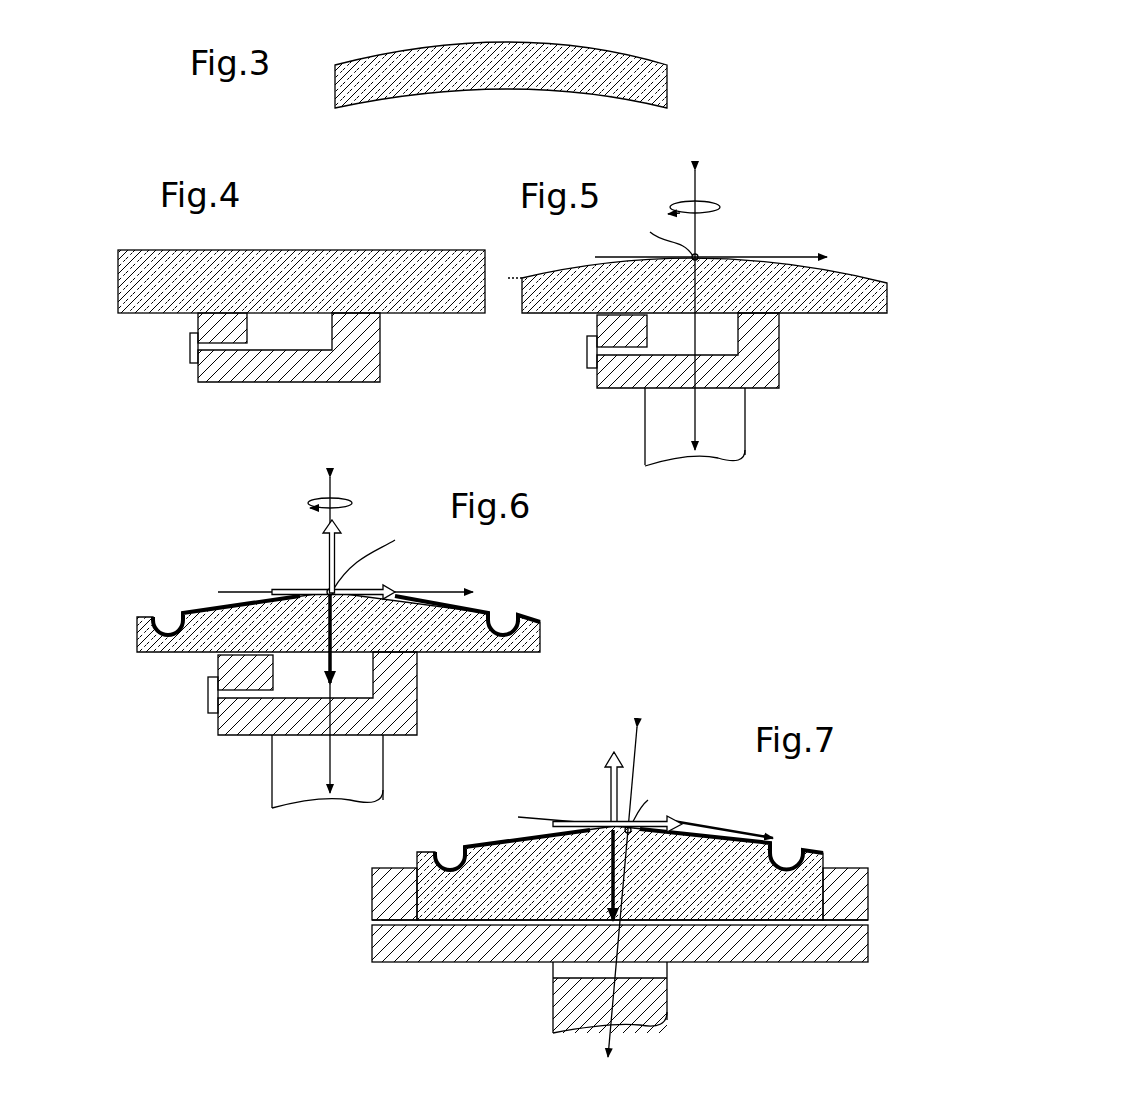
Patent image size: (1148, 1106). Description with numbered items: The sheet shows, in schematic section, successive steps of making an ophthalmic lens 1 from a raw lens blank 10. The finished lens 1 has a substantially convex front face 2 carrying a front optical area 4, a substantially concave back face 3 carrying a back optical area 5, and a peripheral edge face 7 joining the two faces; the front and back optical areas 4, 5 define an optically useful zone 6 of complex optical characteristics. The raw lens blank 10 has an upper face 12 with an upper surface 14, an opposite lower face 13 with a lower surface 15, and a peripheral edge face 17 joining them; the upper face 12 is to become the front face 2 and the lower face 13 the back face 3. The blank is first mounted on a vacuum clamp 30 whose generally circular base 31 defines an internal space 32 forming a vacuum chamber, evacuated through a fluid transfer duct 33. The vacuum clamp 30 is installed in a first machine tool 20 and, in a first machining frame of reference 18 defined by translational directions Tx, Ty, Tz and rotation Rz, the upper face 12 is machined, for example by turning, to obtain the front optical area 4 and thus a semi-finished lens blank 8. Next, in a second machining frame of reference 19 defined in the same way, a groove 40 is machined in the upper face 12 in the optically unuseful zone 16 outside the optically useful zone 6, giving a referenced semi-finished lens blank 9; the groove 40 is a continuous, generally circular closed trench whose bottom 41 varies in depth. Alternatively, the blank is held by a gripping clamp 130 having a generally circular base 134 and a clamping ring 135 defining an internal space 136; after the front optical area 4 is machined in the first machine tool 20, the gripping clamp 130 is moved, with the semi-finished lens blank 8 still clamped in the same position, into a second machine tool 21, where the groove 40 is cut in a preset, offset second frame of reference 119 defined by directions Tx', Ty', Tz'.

In FIG. 3, the ophthalmic lens 1 is at (718, 93).
In FIG. 3, the front face 2 is at (562, 43).
In FIG. 5, the front face 2 is at (848, 276).
In FIG. 6, the front face 2 is at (197, 608).
In FIG. 7, the front face 2 is at (490, 838).
In FIG. 3, the back face 3 is at (509, 94).
In FIG. 3, the front optical area 4 is at (628, 55).
In FIG. 5, the front optical area 4 is at (870, 280).
In FIG. 6, the front optical area 4 is at (232, 598).
In FIG. 7, the front optical area 4 is at (507, 835).
In FIG. 3, the back optical area 5 is at (586, 96).
In FIG. 3, the optically useful zone 6 is at (415, 55).
In FIG. 3, the peripheral edge face 7 is at (668, 86).
In FIG. 5, the semi-finished lens blank 8 is at (892, 258).
In FIG. 6, the referenced semi-finished lens blank 9 is at (564, 632).
In FIG. 7, the referenced semi-finished lens blank 9 is at (833, 830).
In FIG. 4, the raw lens blank 10 is at (114, 325).
In FIG. 4, the upper face 12 is at (296, 250).
In FIG. 3, the lower face 13 is at (475, 0).
In FIG. 4, the lower face 13 is at (400, 313).
In FIG. 5, the lower face 13 is at (800, 314).
In FIG. 6, the lower face 13 is at (477, 655).
In FIG. 7, the lower face 13 is at (448, 920).
In FIG. 4, the upper surface 14 is at (369, 249).
In FIG. 4, the lower surface 15 is at (452, 314).
In FIG. 5, the lower surface 15 is at (843, 314).
In FIG. 6, the lower surface 15 is at (195, 658).
In FIG. 7, the lower surface 15 is at (520, 925).
In FIG. 6, the optically unuseful zone 16 is at (142, 608).
In FIG. 4, the peripheral edge face 17 is at (119, 282).
In FIG. 5, the peripheral edge face 17 is at (890, 296).
In FIG. 6, the peripheral edge face 17 is at (135, 630).
In FIG. 7, the peripheral edge face 17 is at (417, 861).
In FIG. 5, the first machining frame of reference 18 is at (728, 181).
In FIG. 6, the first machining frame of reference 18 is at (300, 475).
In FIG. 7, the first machining frame of reference 18 is at (650, 762).
In FIG. 6, the second machining frame of reference 19 is at (317, 543).
In FIG. 5, the first machine tool 20 is at (672, 470).
In FIG. 6, the first machine tool 20 is at (302, 816).
In FIG. 7, the second machine tool 21 is at (645, 1037).
In FIG. 4, the vacuum clamp 30 is at (198, 387).
In FIG. 5, the vacuum clamp 30 is at (580, 390).
In FIG. 6, the vacuum clamp 30 is at (215, 743).
In FIG. 4, the base 31 is at (212, 322).
In FIG. 5, the base 31 is at (600, 322).
In FIG. 6, the base 31 is at (277, 681).
In FIG. 4, the internal space 32 is at (281, 345).
In FIG. 5, the internal space 32 is at (685, 347).
In FIG. 6, the internal space 32 is at (302, 690).
In FIG. 4, the fluid transfer duct 33 is at (190, 348).
In FIG. 5, the fluid transfer duct 33 is at (590, 350).
In FIG. 6, the fluid transfer duct 33 is at (211, 699).
In FIG. 6, the groove 40 is at (168, 617).
In FIG. 7, the groove 40 is at (450, 853).
In FIG. 6, the bottom 41 is at (170, 644).
In FIG. 7, the offset reference frame 119 is at (603, 778).
In FIG. 7, the gripping clamp 130 is at (358, 962).
In FIG. 7, the base 134 is at (430, 953).
In FIG. 7, the clamping ring 135 is at (377, 898).
In FIG. 7, the internal space 136 is at (752, 921).